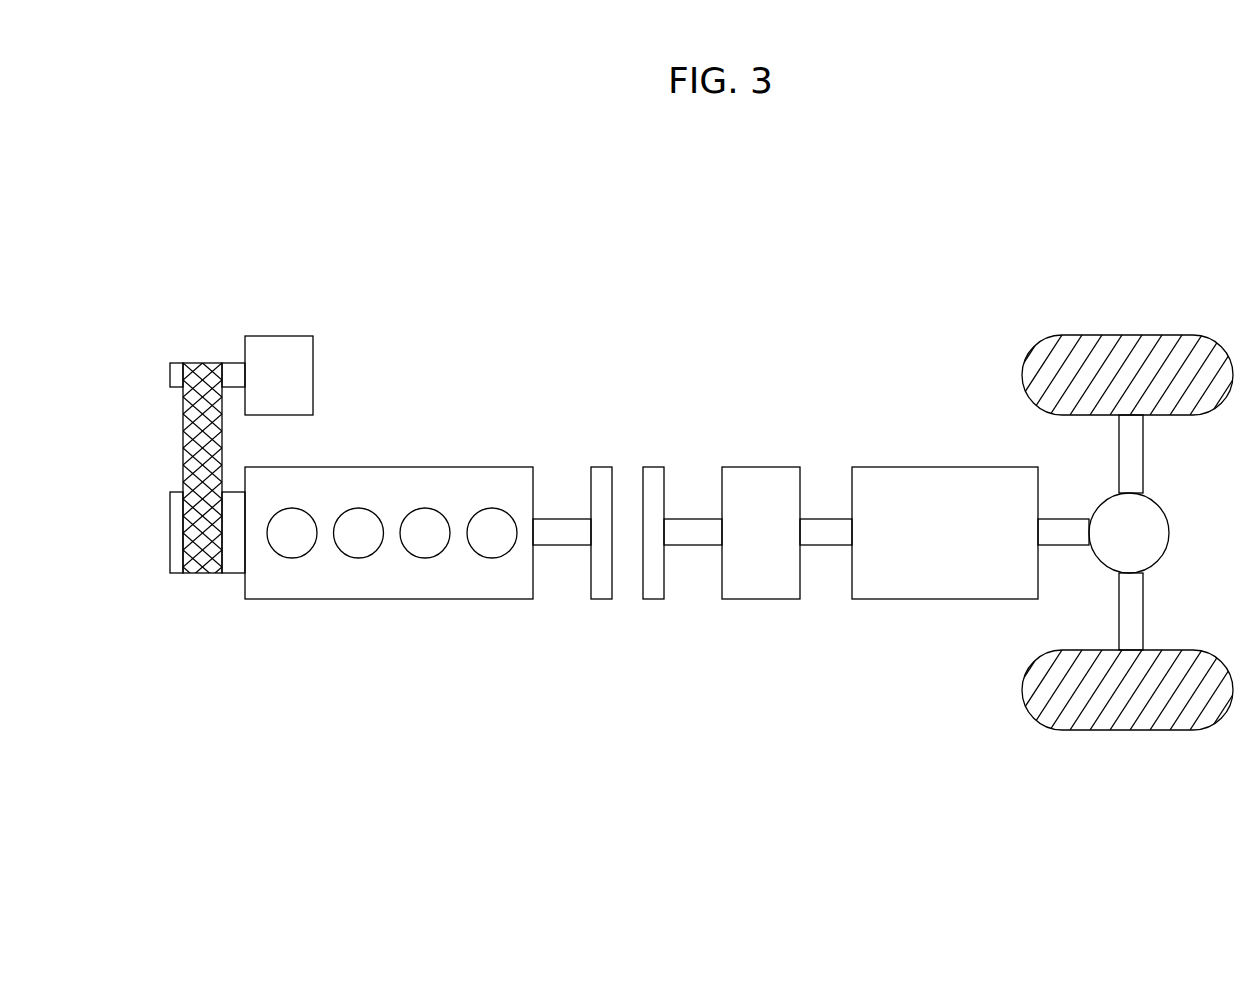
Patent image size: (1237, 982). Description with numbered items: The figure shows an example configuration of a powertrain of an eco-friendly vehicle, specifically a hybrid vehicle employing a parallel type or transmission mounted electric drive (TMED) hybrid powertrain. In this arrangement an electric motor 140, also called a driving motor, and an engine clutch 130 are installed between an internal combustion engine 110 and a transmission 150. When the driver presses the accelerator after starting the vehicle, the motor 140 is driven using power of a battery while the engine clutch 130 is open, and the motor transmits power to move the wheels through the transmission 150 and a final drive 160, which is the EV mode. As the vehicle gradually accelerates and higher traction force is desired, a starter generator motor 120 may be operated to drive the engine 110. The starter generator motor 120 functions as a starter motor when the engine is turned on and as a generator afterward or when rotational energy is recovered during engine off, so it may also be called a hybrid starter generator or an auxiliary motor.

The internal combustion engine 110 is at (485, 467).
The starter generator motor 120 is at (265, 336).
The engine clutch 130 is at (655, 467).
The electric motor 140 is at (752, 467).
The transmission 150 is at (988, 467).
The final drive 160 is at (1165, 508).